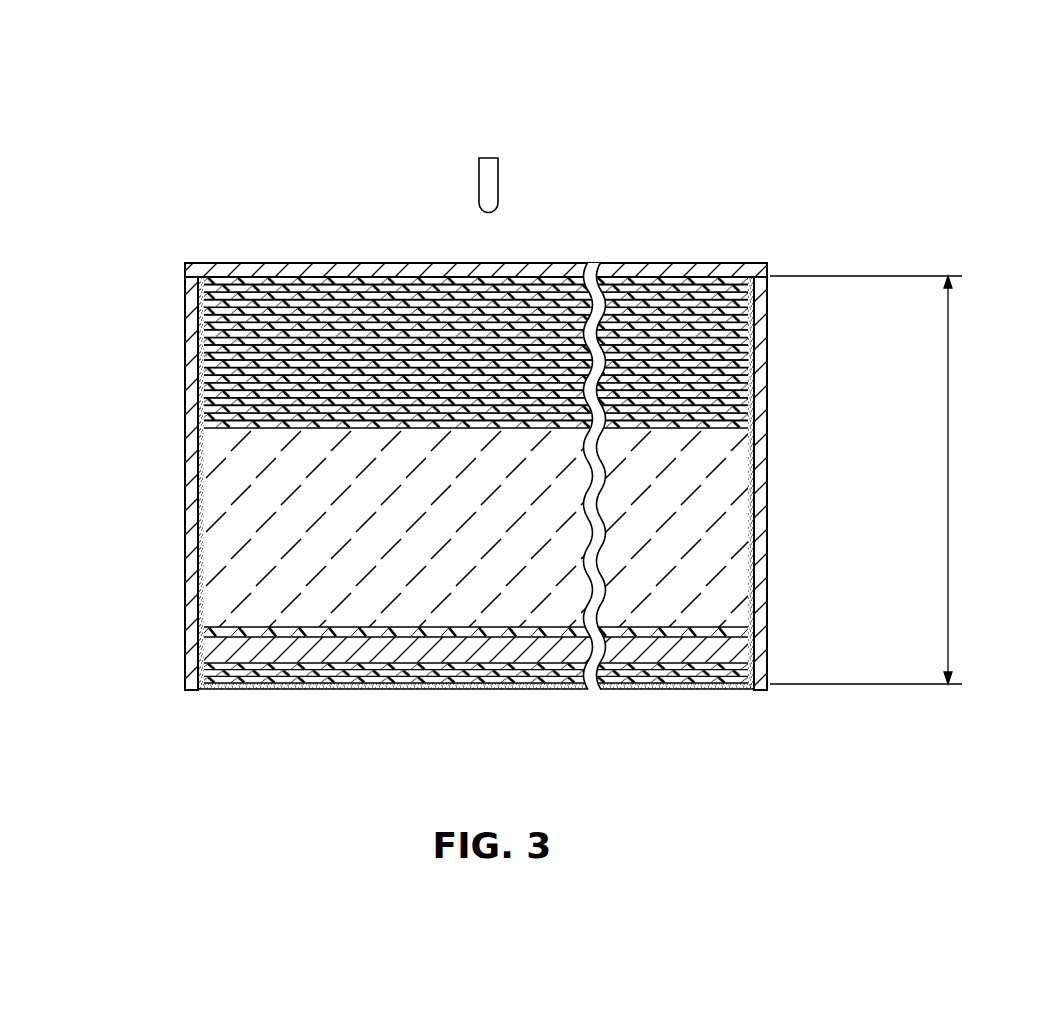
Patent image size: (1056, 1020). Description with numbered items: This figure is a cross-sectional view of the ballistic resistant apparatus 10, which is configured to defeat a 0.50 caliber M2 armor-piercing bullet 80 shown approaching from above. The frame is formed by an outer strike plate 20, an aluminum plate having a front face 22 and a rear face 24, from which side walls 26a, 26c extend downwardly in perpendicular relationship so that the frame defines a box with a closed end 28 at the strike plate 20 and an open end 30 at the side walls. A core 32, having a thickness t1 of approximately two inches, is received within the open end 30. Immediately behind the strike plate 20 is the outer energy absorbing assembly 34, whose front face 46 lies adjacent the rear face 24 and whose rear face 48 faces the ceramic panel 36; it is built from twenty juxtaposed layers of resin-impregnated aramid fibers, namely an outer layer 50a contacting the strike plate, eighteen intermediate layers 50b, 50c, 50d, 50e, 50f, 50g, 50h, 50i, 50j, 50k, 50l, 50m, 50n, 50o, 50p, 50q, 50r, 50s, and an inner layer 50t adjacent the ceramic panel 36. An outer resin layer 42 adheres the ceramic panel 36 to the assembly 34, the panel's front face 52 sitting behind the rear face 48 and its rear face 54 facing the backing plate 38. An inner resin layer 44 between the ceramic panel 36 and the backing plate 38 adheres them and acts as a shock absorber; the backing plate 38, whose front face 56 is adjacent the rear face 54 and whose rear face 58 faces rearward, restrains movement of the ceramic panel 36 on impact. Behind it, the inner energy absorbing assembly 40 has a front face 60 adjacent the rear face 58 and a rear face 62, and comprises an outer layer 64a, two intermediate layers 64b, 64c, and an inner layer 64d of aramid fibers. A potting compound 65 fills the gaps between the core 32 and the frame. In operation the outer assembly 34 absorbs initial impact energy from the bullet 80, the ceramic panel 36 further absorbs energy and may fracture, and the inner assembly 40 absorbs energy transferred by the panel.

The ballistic resistant apparatus 10 is at (777, 137).
The outer strike plate 20 is at (300, 264).
The front face 22 is at (672, 264).
The rear face 24 is at (362, 283).
The side wall 26a is at (770, 505).
The side wall 26c is at (197, 555).
The closed end 28 is at (189, 190).
The open end 30 is at (215, 703).
The core 32 is at (197, 540).
The outer energy absorbing assembly 34 is at (500, 273).
The ceramic panel 36 is at (738, 545).
The backing plate 38 is at (755, 633).
The inner energy absorbing assembly 40 is at (690, 690).
The outer resin layer 42 is at (250, 430).
The inner resin layer 44 is at (255, 632).
The front face 46 is at (560, 277).
The rear face 48 is at (435, 400).
The outer layer 50a is at (243, 278).
The intermediate layer 50b is at (730, 277).
The intermediate layer 50c is at (200, 290).
The intermediate layer 50d is at (762, 292).
The intermediate layer 50e is at (200, 305).
The intermediate layer 50f is at (762, 303).
The intermediate layer 50g is at (200, 320).
The intermediate layer 50h is at (762, 312).
The intermediate layer 50i is at (200, 332).
The intermediate layer 50j is at (762, 325).
The intermediate layer 50k is at (200, 345).
The intermediate layer 50l is at (762, 340).
The intermediate layer 50m is at (200, 358).
The intermediate layer 50n is at (762, 352).
The intermediate layer 50o is at (200, 372).
The intermediate layer 50p is at (762, 368).
The intermediate layer 50q is at (200, 388).
The intermediate layer 50r is at (762, 385).
The intermediate layer 50s is at (200, 420).
The inner layer 50t is at (762, 405).
The front face 52 is at (226, 518).
The rear face 54 is at (262, 633).
The front face 56 is at (515, 680).
The rear face 58 is at (468, 663).
The front face 60 is at (322, 668).
The rear face 62 is at (395, 690).
The outer layer 64a is at (255, 669).
The intermediate layer 64b is at (755, 672).
The intermediate layer 64c is at (200, 688).
The inner layer 64d is at (752, 690).
The potting compound 65 is at (625, 690).
The bullet 80 is at (490, 156).
The thickness t1 is at (952, 486).